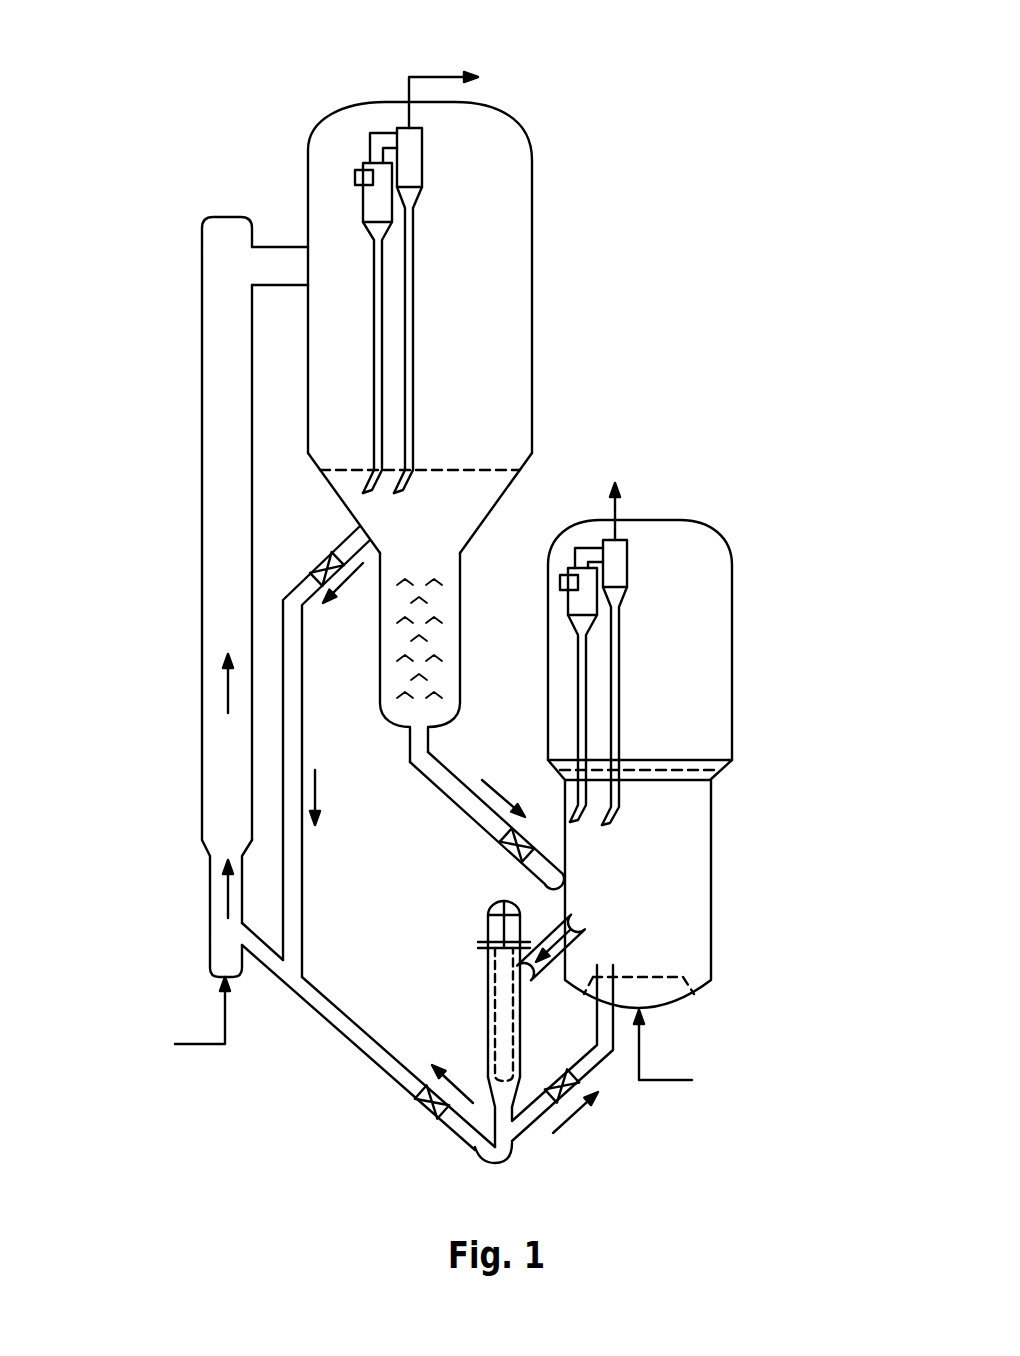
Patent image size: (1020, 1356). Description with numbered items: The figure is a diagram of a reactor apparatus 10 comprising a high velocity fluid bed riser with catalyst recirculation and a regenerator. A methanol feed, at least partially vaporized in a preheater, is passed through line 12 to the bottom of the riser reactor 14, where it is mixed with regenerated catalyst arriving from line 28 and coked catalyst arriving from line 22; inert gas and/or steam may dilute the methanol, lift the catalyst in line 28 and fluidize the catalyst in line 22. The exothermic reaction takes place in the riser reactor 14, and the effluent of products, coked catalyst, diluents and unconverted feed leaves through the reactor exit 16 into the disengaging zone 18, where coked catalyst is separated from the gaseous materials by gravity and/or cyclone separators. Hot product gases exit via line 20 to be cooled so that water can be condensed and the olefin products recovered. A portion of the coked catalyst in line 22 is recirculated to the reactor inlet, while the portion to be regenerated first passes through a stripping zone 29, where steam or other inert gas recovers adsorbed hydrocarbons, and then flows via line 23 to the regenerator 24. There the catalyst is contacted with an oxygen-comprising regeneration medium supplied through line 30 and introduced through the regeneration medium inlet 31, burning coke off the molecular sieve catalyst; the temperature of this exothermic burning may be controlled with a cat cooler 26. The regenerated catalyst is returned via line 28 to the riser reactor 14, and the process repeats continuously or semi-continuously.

The reactor apparatus 10 is at (693, 240).
The line 12 is at (200, 1045).
The riser reactor 14 is at (202, 634).
The reactor exit 16 is at (280, 247).
The disengaging zone 18 is at (532, 342).
The line 20 is at (430, 77).
The line 22 is at (302, 733).
The line 23 is at (468, 817).
The regenerator 24 is at (712, 660).
The cat cooler 26 is at (498, 993).
The line 28 is at (347, 1040).
The stripping zone 29 is at (450, 607).
The line 30 is at (670, 1081).
The regeneration medium inlet 31 is at (641, 1052).